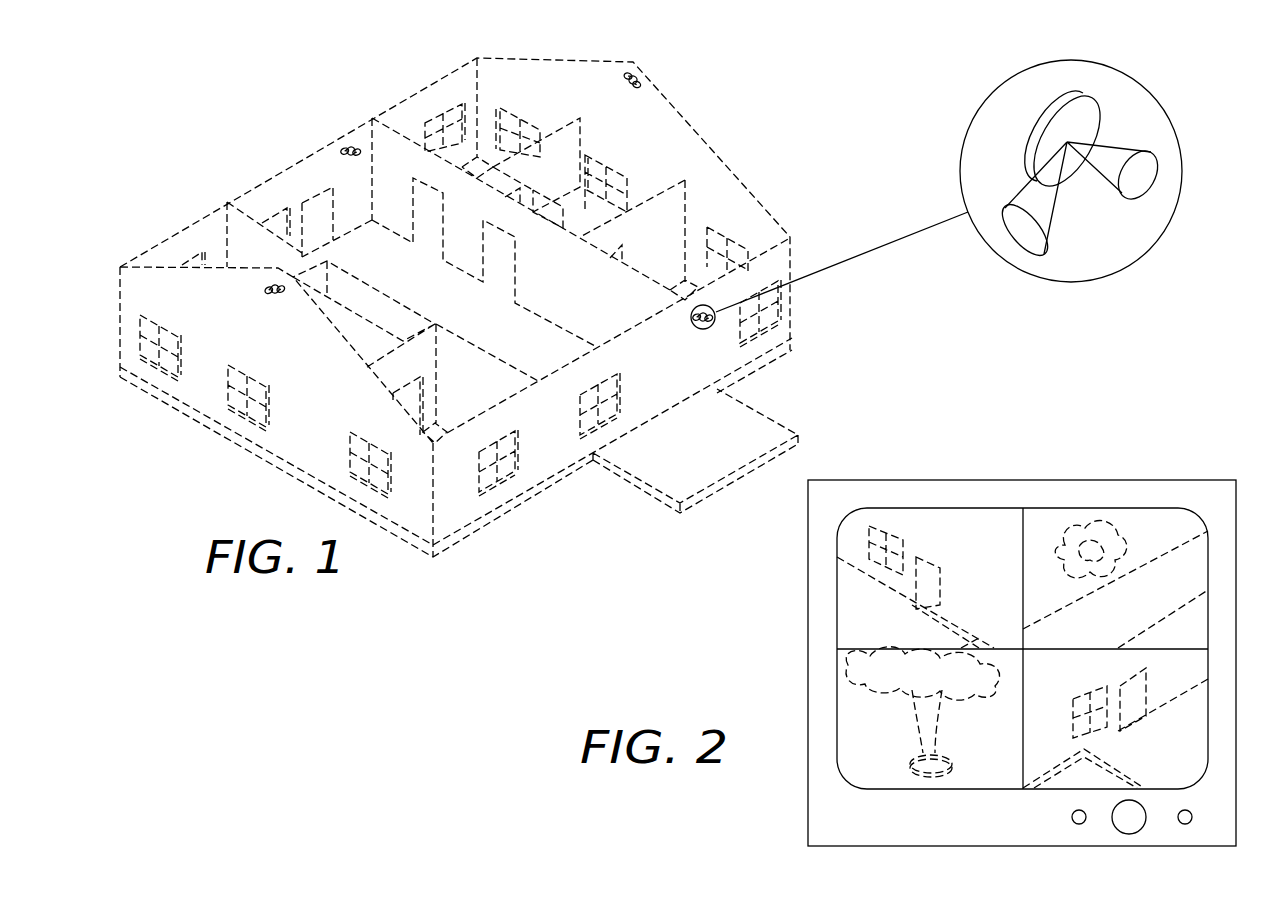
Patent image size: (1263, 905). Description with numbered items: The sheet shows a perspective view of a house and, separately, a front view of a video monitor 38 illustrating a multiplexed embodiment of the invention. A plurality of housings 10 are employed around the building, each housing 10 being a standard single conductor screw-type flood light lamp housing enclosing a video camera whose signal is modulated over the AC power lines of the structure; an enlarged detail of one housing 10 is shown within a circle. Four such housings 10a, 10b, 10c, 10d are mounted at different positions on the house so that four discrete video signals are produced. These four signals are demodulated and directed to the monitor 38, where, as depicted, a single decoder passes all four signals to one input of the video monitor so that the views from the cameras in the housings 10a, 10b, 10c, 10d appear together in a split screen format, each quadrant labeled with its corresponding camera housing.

In FIG. 1, the housing 10 is at (1055, 212).
In FIG. 1, the housing 10a is at (705, 329).
In FIG. 2, the housing 10a is at (927, 579).
In FIG. 1, the housing 10b is at (280, 288).
In FIG. 2, the housing 10b is at (1115, 580).
In FIG. 1, the housing 10c is at (345, 155).
In FIG. 2, the housing 10c is at (1115, 728).
In FIG. 1, the housing 10d is at (642, 88).
In FIG. 2, the housing 10d is at (932, 715).
In FIG. 2, the monitor 38 is at (1103, 483).